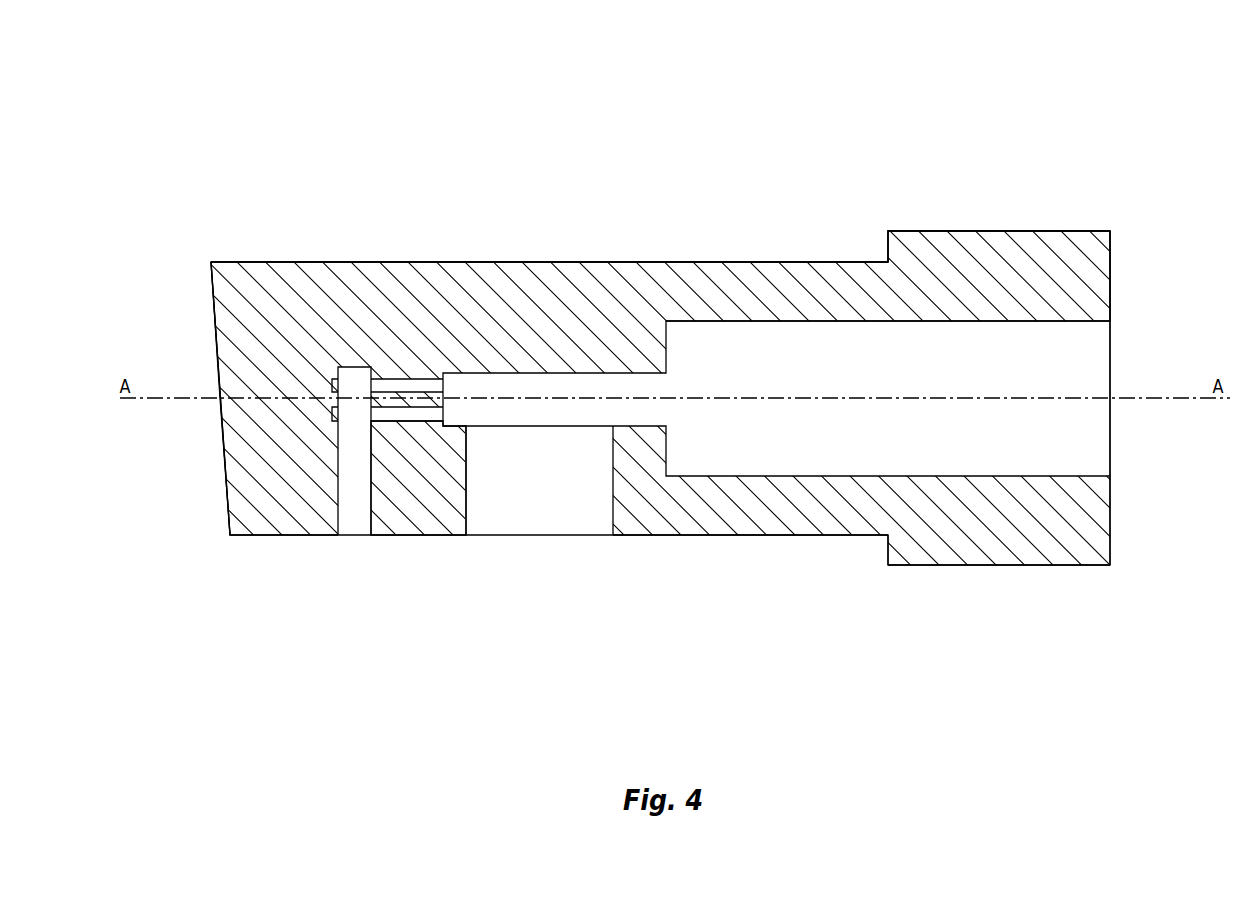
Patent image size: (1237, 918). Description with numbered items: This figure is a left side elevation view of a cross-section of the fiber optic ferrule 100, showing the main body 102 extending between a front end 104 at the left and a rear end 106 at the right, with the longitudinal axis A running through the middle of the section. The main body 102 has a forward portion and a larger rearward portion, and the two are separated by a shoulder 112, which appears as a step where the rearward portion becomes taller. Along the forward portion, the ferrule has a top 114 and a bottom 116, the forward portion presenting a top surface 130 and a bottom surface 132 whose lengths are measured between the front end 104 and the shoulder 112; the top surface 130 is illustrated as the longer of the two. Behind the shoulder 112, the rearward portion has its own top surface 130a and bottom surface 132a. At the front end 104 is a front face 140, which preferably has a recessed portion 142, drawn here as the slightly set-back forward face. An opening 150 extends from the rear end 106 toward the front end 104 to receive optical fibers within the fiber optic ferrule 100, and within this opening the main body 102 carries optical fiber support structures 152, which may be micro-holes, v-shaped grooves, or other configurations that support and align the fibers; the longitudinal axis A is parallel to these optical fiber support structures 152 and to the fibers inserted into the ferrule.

The fiber optic ferrule 100 is at (1124, 105).
The main body 102 is at (542, 547).
The front end 104 is at (212, 518).
The rear end 106 is at (1118, 521).
The shoulder 112 is at (889, 552).
The top 114 is at (348, 262).
The bottom 116 is at (407, 535).
The top surface 130 is at (775, 262).
The top surface of rearward portion 130a is at (1043, 230).
The bottom surface 132 is at (688, 535).
The bottom surface of rearward portion 132a is at (1027, 565).
The front face 140 is at (210, 283).
The recessed portion 142 is at (215, 377).
The opening 150 is at (1098, 432).
The optical fiber support structures 152 is at (398, 385).